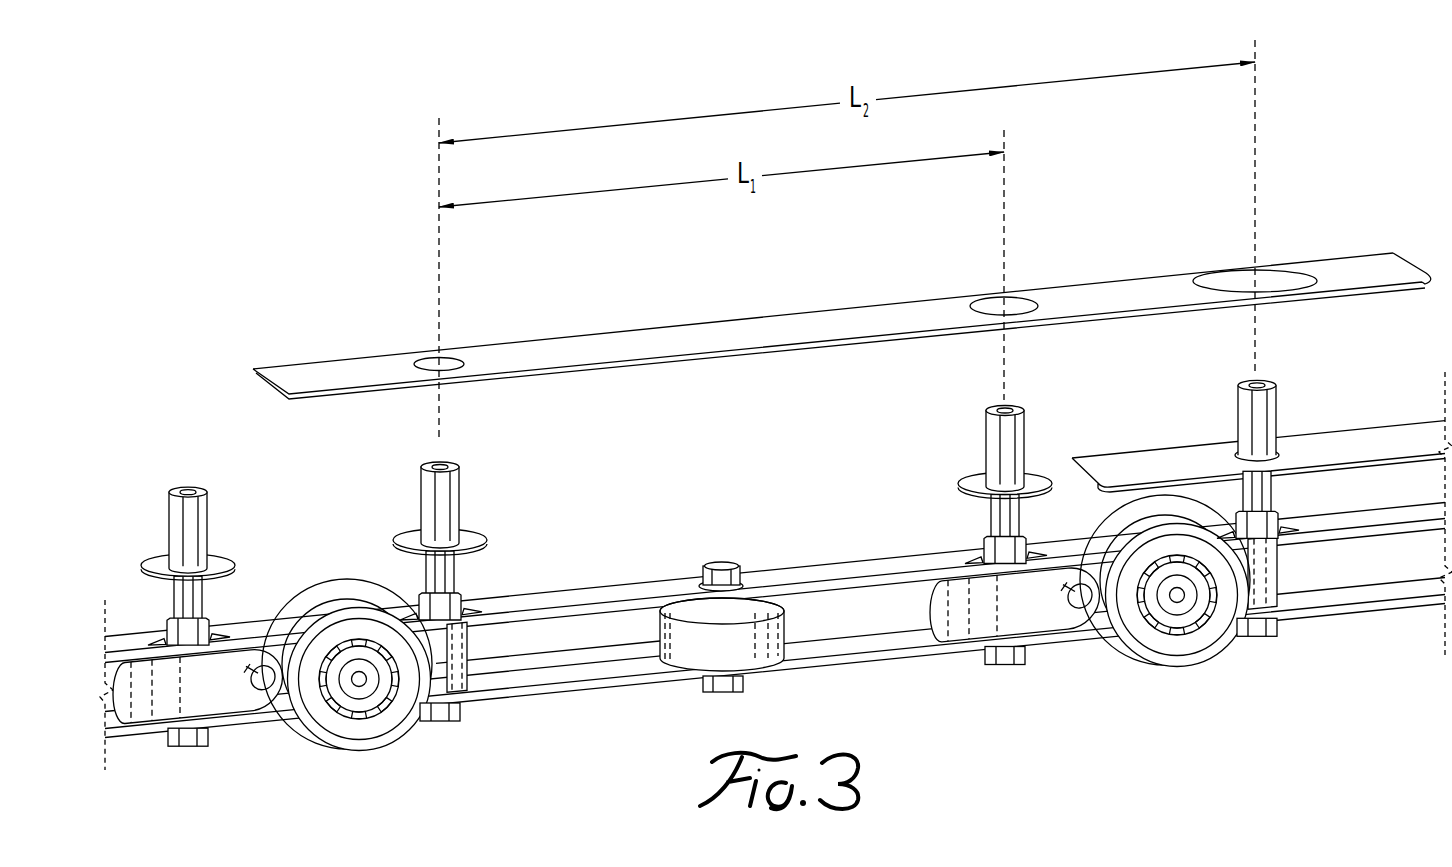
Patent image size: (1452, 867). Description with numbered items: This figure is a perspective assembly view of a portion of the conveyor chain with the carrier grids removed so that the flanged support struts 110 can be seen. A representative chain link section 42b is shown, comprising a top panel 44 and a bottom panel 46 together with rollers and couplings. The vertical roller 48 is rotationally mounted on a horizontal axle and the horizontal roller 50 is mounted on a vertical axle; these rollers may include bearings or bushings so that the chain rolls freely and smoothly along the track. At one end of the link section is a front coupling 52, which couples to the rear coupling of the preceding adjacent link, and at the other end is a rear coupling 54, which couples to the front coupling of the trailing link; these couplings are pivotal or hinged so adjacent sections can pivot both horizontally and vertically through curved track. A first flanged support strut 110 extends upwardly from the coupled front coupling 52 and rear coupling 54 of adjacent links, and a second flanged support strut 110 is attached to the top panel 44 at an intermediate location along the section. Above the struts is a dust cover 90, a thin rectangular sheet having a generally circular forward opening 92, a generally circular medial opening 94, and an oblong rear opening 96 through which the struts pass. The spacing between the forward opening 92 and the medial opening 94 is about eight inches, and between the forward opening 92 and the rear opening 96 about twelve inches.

The flanged support strut 110 is at (213, 513).
The dust cover 90 is at (842, 302).
The forward opening 92 is at (450, 357).
The medial opening 94 is at (1010, 300).
The rear opening 96 is at (1293, 273).
The top panel 44 is at (590, 596).
The bottom panel 46 is at (913, 658).
The horizontal roller 50 is at (688, 642).
The front coupling 52 is at (170, 706).
The rear coupling 54 is at (975, 548).
The vertical roller 48 is at (318, 745).
The linked section 42b is at (578, 712).